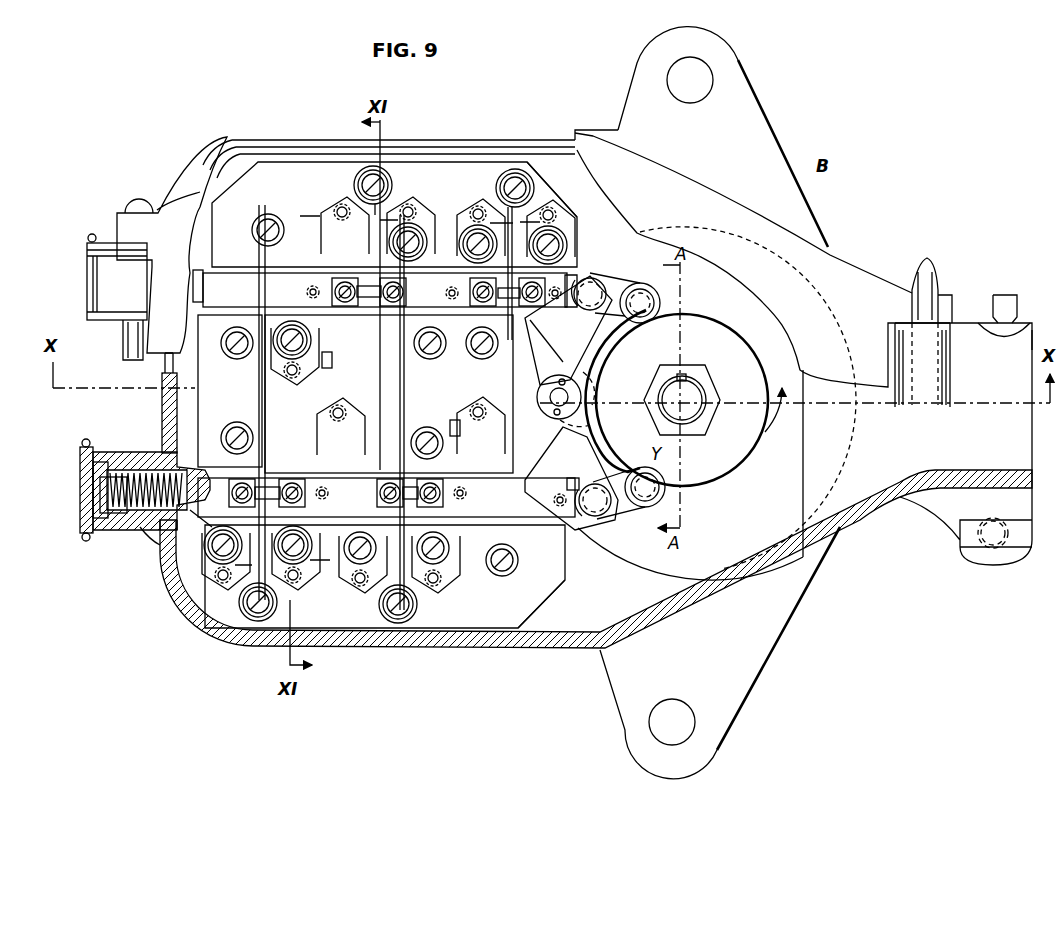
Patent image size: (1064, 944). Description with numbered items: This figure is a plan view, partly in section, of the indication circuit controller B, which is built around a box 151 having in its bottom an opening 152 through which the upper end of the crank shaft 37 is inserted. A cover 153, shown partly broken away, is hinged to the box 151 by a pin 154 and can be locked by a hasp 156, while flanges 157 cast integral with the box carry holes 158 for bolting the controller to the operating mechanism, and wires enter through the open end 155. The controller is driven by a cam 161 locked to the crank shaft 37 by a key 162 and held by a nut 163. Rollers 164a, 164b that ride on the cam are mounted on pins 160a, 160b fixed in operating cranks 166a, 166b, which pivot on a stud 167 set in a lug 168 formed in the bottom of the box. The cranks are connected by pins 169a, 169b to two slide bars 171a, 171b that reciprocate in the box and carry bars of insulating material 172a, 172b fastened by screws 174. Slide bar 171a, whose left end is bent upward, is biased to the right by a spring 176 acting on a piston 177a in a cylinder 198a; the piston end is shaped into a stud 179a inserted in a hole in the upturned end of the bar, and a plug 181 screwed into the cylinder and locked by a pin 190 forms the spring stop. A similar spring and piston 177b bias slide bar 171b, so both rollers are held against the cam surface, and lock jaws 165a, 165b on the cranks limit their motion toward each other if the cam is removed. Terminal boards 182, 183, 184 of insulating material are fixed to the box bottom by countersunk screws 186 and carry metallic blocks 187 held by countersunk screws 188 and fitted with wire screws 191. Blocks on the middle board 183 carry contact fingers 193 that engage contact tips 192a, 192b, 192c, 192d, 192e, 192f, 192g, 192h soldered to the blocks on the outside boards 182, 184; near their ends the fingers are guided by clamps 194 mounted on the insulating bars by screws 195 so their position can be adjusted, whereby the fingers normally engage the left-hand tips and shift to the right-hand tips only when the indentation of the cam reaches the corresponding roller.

The crank shaft 37 is at (692, 433).
The box 151 is at (435, 643).
The opening 152 is at (857, 432).
The cover 153 is at (762, 207).
The pin 154 is at (130, 340).
The open end 155 is at (1034, 437).
The hasp 156 is at (932, 270).
The flanges 157 is at (773, 643).
The holes 158 is at (690, 728).
The pin 160a is at (665, 488).
The pin 160b is at (662, 300).
The cam 161 is at (733, 337).
The key 162 is at (686, 377).
The nut 163 is at (710, 415).
The roller 164a is at (667, 502).
The roller 164b is at (653, 277).
The lock jaw 165a is at (590, 426).
The lock jaw 165b is at (585, 402).
The operating crank 166a is at (592, 465).
The operating crank 166b is at (585, 333).
The stud 167 is at (553, 388).
The lug 168 is at (563, 360).
The pin 169a is at (603, 512).
The pin 169b is at (575, 278).
The slide bar 171a is at (570, 523).
The slide bar 171b is at (577, 270).
The bar of insulating material 172a is at (523, 522).
The bar of insulating material 172b is at (440, 277).
The screws 174 is at (558, 498).
The spring 176 is at (127, 473).
The piston 177a is at (177, 537).
The piston 177b is at (187, 263).
The stud 179a is at (210, 527).
The plug 181 is at (86, 476).
The terminal board 182 is at (548, 185).
The terminal board 183 is at (203, 360).
The terminal board 184 is at (542, 597).
The countersunk screws 186 is at (512, 567).
The metallic blocks 187 is at (443, 572).
The countersunk screws 188 is at (480, 408).
The pin 190 is at (85, 505).
The screws 191 is at (448, 550).
The contact tip 192a is at (548, 200).
The contact tip 192b is at (513, 180).
The contact tip 192c is at (383, 210).
The contact tip 192d is at (362, 183).
The contact tip 192e is at (237, 600).
The contact tip 192f is at (280, 607).
The contact tip 192g is at (392, 600).
The contact tip 192h is at (423, 603).
The contact fingers 193 is at (265, 445).
The clamps 194 is at (322, 493).
The screws 195 is at (402, 283).
The cylinder 198a is at (118, 507).